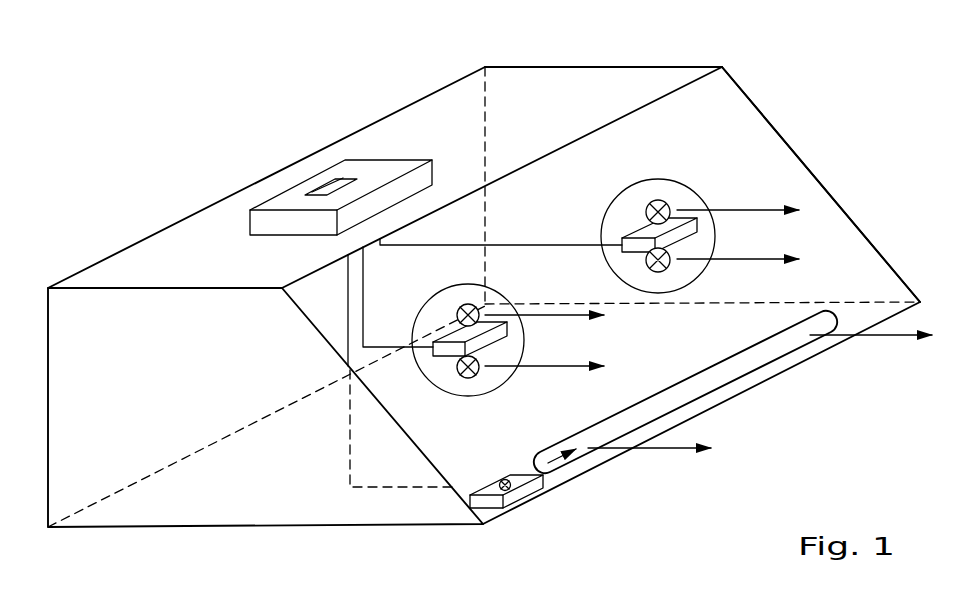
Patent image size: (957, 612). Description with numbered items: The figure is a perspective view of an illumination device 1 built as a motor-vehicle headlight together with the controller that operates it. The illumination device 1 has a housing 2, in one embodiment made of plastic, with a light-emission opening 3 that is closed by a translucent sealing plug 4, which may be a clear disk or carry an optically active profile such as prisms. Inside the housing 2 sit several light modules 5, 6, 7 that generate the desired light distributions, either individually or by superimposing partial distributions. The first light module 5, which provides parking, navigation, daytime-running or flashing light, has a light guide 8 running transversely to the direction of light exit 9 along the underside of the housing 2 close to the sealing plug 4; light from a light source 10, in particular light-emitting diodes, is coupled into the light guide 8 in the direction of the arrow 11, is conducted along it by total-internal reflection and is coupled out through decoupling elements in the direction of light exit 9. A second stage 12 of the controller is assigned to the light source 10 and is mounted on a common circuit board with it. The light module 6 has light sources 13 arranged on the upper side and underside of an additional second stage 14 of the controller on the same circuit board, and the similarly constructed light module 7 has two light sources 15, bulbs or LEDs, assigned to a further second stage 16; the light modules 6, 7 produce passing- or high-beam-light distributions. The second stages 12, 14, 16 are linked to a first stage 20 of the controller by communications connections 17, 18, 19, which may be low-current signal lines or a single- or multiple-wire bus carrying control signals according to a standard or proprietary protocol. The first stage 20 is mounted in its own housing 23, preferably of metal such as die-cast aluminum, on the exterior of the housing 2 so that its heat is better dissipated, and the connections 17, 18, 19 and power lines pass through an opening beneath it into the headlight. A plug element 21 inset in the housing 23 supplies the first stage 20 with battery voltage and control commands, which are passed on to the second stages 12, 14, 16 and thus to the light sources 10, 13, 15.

The illumination device 1 is at (178, 118).
The housing 2 is at (172, 503).
The light-emission opening 3 is at (710, 79).
The sealing plug 4 is at (765, 145).
The first light module 5 is at (527, 458).
The light module 6 is at (505, 353).
The light module 7 is at (647, 254).
The light guide 8 is at (722, 376).
The direction of light exit 9 is at (883, 338).
The light source 10 is at (512, 487).
The coupled-in light 11 is at (560, 458).
The second stage 12 is at (492, 505).
The light sources 13 is at (460, 307).
The second stage 14 is at (522, 330).
The light sources 15 is at (656, 200).
The second stage 16 is at (637, 233).
The communications connection 17 is at (348, 312).
The communications connection 18 is at (363, 325).
The communications connection 19 is at (505, 245).
The first stage 20 is at (341, 150).
The plug element 21 is at (320, 185).
The housing 23 is at (388, 170).